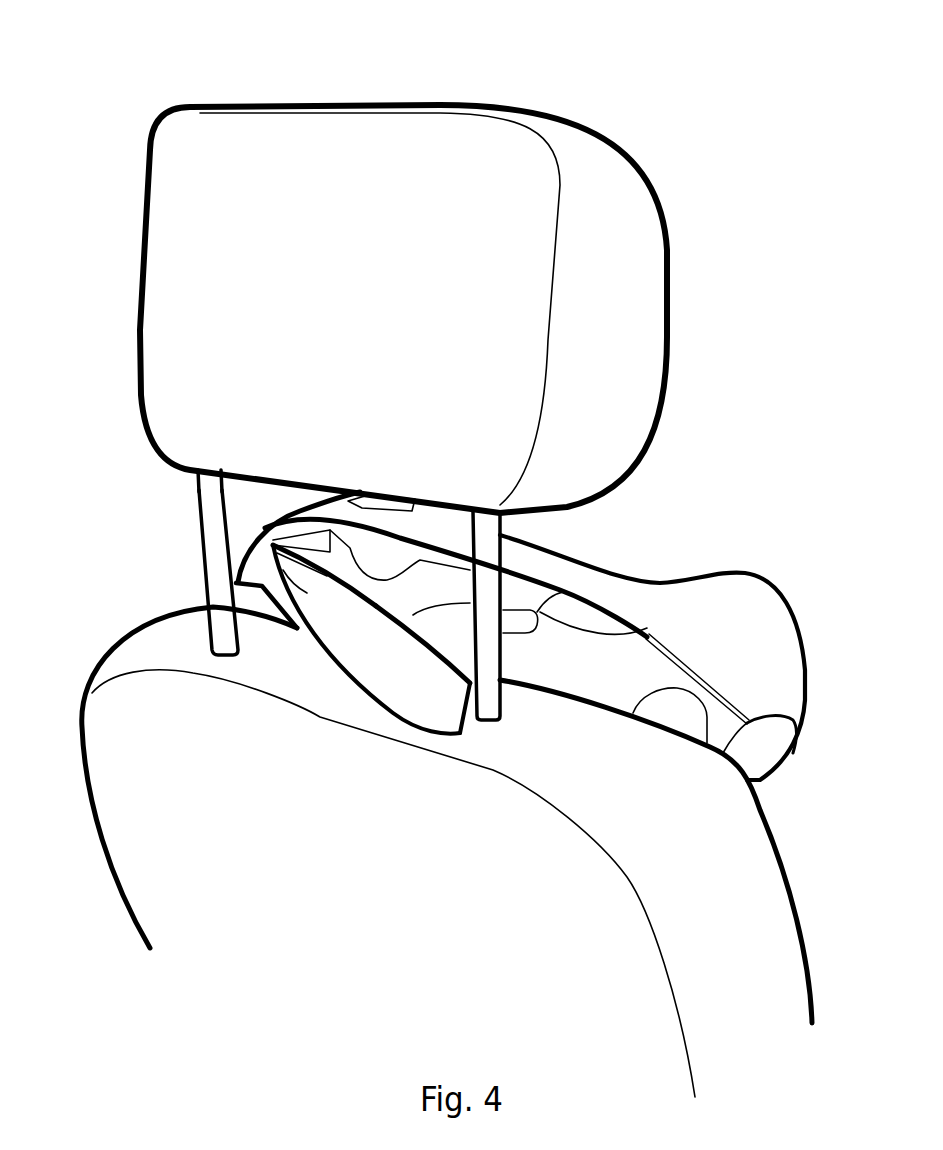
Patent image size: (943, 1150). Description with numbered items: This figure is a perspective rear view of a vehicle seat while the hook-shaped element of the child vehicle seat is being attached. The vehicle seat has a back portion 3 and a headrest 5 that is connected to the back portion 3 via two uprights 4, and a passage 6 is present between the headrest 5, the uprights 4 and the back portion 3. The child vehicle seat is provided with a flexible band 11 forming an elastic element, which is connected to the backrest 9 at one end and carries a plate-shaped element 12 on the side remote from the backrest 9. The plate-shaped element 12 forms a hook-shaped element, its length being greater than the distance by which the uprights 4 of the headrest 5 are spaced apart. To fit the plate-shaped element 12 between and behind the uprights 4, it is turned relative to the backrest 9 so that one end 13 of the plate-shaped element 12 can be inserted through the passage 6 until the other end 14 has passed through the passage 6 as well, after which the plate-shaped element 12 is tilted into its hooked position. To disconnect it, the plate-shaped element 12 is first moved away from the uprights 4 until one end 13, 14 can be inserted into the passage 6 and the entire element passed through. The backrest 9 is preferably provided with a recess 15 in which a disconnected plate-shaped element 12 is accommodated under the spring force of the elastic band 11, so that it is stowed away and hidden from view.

The back portion 3 is at (167, 642).
The uprights 4 is at (212, 515).
The headrest 5 is at (412, 153).
The passage 6 is at (238, 486).
The backrest 9 is at (683, 600).
The flexible band 11 is at (387, 590).
The plate-shaped element 12 is at (393, 670).
The one end of the plate-shaped element 13 is at (452, 717).
The other end of the plate-shaped element 14 is at (272, 545).
The recess 15 is at (525, 593).